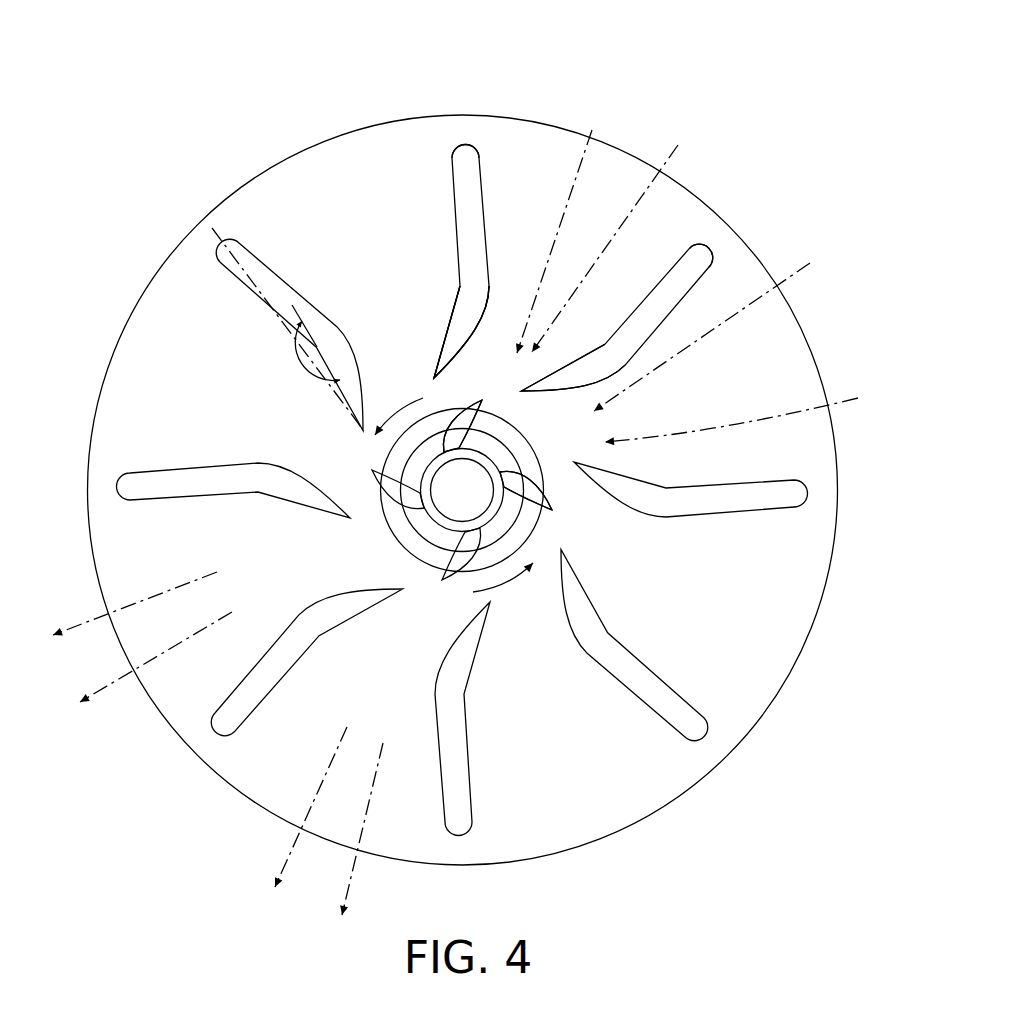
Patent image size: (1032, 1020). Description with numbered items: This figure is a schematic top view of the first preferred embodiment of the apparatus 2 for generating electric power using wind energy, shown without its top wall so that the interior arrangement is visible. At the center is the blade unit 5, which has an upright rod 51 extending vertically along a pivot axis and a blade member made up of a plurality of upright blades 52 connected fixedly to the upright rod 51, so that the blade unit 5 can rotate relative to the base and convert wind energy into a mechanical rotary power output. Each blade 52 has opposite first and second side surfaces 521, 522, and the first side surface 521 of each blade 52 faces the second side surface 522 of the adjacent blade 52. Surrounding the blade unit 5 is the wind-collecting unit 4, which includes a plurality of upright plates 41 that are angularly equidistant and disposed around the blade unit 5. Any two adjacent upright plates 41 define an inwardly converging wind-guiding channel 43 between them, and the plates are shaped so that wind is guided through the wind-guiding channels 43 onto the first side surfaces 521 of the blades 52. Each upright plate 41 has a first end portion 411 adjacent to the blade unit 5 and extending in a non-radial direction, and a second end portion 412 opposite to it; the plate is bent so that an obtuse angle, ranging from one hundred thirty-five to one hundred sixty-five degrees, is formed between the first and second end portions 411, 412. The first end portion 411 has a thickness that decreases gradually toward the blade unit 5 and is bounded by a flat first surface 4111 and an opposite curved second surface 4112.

The apparatus 2 is at (263, 110).
The wind-collecting unit 4 is at (462, 458).
The upright plate 41 is at (455, 218).
The first end portion 411 is at (458, 325).
The flat first surface 4111 is at (455, 295).
The curved second surface 4112 is at (487, 300).
The second end portion 412 is at (450, 177).
The wind-guiding channel 43 is at (545, 172).
The blade unit 5 is at (466, 507).
The upright rod 51 is at (545, 525).
The upright blade 52 is at (365, 467).
The first side surface 521 is at (487, 418).
The second side surface 522 is at (455, 410).